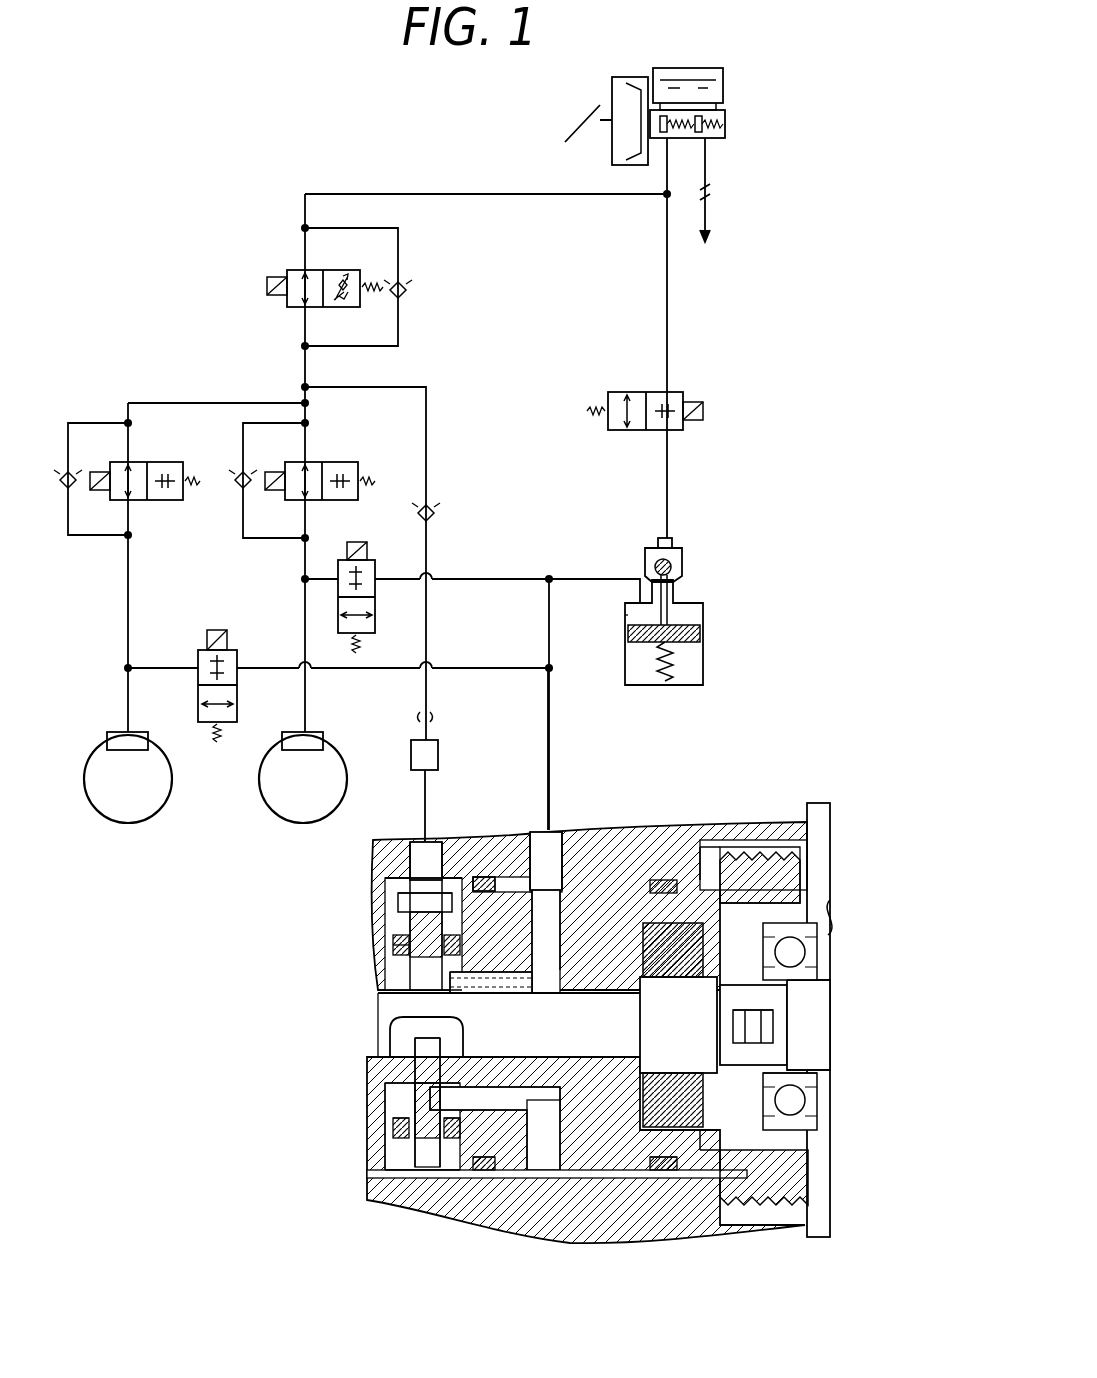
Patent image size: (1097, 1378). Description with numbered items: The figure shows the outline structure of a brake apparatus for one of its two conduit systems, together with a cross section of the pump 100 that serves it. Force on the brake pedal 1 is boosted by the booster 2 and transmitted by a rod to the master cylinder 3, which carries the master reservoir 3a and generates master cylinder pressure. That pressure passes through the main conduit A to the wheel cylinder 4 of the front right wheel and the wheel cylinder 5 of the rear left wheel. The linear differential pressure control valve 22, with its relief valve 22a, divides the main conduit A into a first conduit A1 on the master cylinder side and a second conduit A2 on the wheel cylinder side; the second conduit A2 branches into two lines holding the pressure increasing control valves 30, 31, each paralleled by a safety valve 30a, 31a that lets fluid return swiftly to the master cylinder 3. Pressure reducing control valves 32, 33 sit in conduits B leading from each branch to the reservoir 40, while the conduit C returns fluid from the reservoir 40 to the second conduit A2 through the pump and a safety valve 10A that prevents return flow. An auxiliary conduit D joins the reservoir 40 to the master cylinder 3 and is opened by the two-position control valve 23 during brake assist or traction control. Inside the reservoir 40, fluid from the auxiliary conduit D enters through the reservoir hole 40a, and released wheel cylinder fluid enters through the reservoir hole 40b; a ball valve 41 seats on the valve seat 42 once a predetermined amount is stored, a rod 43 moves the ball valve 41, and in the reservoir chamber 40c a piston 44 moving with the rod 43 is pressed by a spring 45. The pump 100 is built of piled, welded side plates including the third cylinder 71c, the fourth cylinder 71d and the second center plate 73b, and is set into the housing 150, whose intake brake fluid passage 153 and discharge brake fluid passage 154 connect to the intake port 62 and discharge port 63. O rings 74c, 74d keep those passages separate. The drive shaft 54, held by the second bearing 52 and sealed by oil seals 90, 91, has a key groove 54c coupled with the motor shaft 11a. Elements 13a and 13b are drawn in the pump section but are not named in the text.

The brake pedal 1 is at (598, 112).
The booster 2 is at (612, 90).
The master cylinder 3 is at (726, 136).
The master reservoir 3a is at (723, 86).
The wheel cylinder 4 is at (107, 741).
The wheel cylinder 5 is at (282, 741).
The safety valve 10A is at (434, 514).
The motor shaft 11a is at (815, 1003).
The housing portion 13a is at (400, 912).
The housing portion 13b is at (398, 950).
The linear differential pressure control valve 22 is at (290, 308).
The relief valve 22a is at (408, 291).
The two-position control valve 23 is at (643, 392).
The pressure increasing control valve 30 is at (160, 502).
The safety valve 30a is at (68, 489).
The pressure increasing control valve 31 is at (316, 462).
The safety valve 31a is at (241, 478).
The pressure reducing control valve 32 is at (198, 710).
The pressure reducing control valve 33 is at (376, 632).
The reservoir 40 is at (654, 605).
The reservoir hole 40a is at (669, 541).
The reservoir hole 40b is at (632, 599).
The reservoir chamber 40c is at (631, 615).
The ball valve 41 is at (671, 565).
The valve seat 42 is at (683, 580).
The rod 43 is at (674, 598).
The piston 44 is at (688, 645).
The spring 45 is at (681, 676).
The second bearing 52 is at (380, 1085).
The drive shaft 54 is at (385, 1012).
The key groove 54c is at (740, 1058).
The intake port 62 is at (566, 1150).
The discharge port 63 is at (486, 877).
The third cylinder 71c is at (400, 1172).
The fourth cylinder 71d is at (468, 1165).
The second center plate 73b is at (380, 1150).
The O ring 74c is at (392, 878).
The O ring 74d is at (640, 1160).
The oil seal 90 is at (590, 1150).
The oil seal 91 is at (678, 1160).
The pump 100 is at (338, 977).
The housing 150 is at (770, 846).
The intake brake fluid passage 153 is at (566, 836).
The discharge brake fluid passage 154 is at (452, 842).
The main conduit A is at (521, 198).
The first conduit A1 is at (397, 194).
The second conduit A2 is at (305, 374).
The conduit B is at (510, 579).
The conduit C is at (427, 458).
The auxiliary conduit D is at (665, 285).